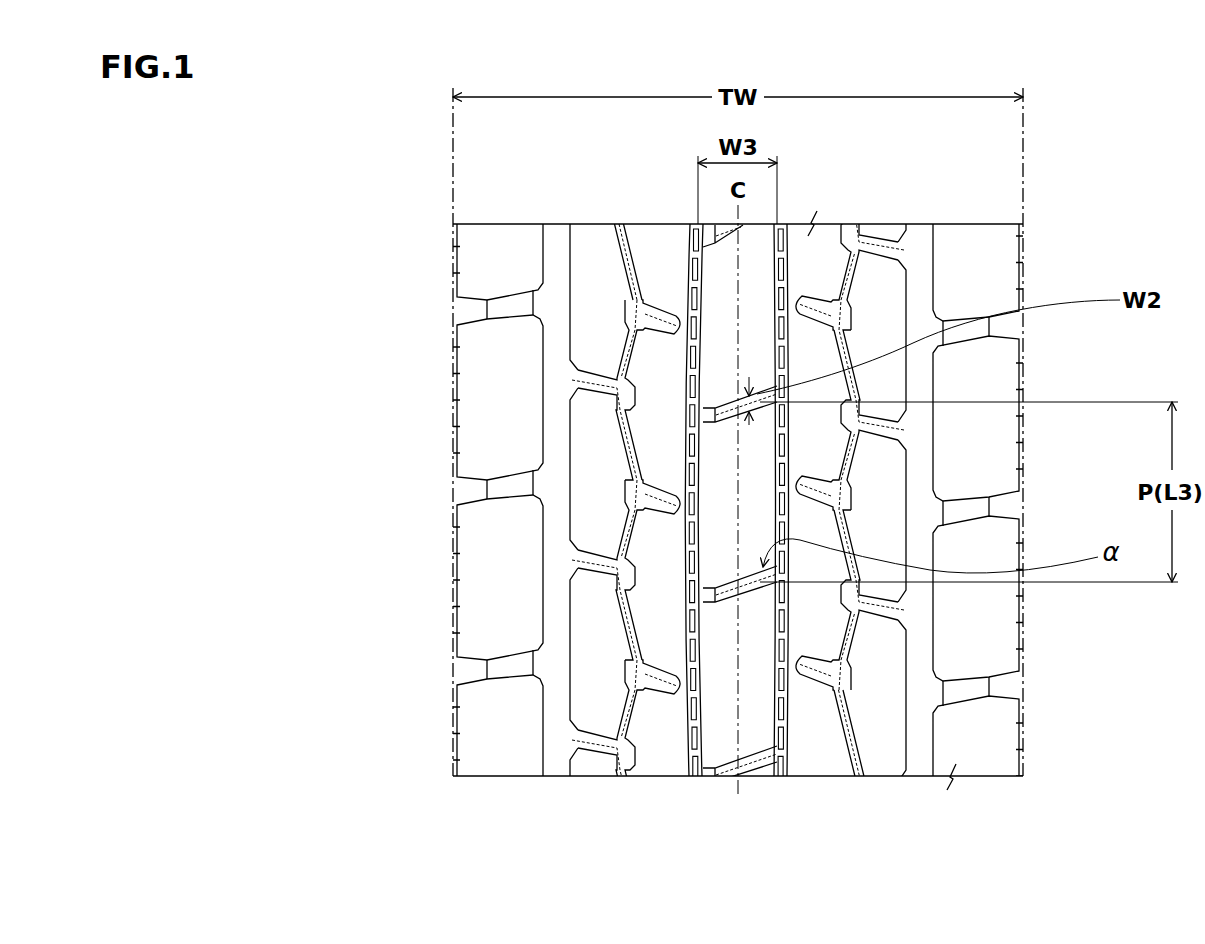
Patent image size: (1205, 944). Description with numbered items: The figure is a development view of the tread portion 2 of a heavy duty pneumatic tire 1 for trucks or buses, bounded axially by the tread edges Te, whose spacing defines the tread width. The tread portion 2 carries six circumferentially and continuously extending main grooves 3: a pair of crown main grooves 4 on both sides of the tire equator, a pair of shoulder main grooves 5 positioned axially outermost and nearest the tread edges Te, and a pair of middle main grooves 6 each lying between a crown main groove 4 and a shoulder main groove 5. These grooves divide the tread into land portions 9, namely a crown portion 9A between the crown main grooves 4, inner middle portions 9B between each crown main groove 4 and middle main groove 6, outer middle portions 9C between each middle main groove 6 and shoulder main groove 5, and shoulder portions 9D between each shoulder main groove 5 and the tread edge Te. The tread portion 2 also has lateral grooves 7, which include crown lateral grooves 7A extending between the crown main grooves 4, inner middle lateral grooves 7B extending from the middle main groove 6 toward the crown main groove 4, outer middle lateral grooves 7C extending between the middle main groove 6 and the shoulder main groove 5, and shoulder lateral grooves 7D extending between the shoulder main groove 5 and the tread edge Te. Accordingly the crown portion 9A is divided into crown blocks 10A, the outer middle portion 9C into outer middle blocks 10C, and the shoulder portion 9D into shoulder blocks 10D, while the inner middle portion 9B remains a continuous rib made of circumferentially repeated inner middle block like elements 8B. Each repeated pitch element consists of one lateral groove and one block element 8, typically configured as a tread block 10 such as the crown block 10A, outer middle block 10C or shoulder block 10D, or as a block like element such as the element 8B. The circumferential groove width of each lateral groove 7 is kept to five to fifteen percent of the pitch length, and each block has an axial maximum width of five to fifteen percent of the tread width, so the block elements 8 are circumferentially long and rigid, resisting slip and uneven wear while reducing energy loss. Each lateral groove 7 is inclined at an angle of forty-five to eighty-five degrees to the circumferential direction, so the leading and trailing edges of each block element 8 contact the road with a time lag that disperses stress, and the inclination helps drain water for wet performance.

The heavy duty pneumatic tire 1 is at (475, 429).
The tread portion 2 is at (963, 212).
The main grooves 3 is at (915, 152).
The crown main groove 4 is at (693, 223).
The shoulder main groove 5 is at (559, 238).
The middle main groove 6 is at (622, 221).
The lateral grooves 7 is at (509, 570).
The crown lateral groove 7A is at (720, 585).
The inner middle lateral groove 7B is at (662, 674).
The outer middle lateral groove 7C is at (592, 738).
The shoulder lateral groove 7D is at (422, 664).
The block element 8 is at (475, 429).
The inner middle block like element 8B is at (657, 447).
The land portions 9 is at (641, 563).
The crown portion 9A is at (718, 762).
The inner middle portion 9B is at (663, 768).
The outer middle portion 9C is at (589, 772).
The shoulder portion 9D is at (530, 810).
The tread block 10 is at (506, 420).
The crown block 10A is at (722, 355).
The outer middle block 10C is at (590, 347).
The shoulder block 10D is at (414, 425).
The tread edge Te is at (453, 257).